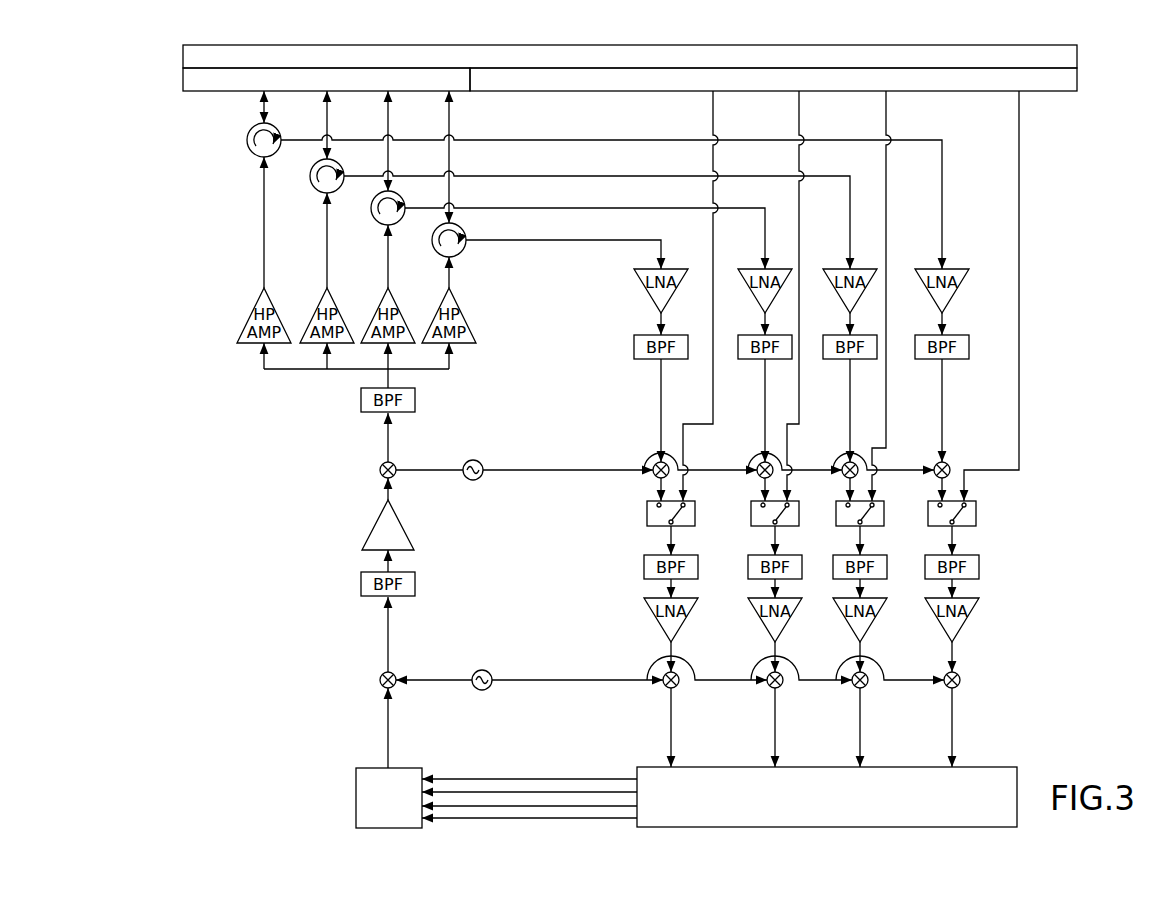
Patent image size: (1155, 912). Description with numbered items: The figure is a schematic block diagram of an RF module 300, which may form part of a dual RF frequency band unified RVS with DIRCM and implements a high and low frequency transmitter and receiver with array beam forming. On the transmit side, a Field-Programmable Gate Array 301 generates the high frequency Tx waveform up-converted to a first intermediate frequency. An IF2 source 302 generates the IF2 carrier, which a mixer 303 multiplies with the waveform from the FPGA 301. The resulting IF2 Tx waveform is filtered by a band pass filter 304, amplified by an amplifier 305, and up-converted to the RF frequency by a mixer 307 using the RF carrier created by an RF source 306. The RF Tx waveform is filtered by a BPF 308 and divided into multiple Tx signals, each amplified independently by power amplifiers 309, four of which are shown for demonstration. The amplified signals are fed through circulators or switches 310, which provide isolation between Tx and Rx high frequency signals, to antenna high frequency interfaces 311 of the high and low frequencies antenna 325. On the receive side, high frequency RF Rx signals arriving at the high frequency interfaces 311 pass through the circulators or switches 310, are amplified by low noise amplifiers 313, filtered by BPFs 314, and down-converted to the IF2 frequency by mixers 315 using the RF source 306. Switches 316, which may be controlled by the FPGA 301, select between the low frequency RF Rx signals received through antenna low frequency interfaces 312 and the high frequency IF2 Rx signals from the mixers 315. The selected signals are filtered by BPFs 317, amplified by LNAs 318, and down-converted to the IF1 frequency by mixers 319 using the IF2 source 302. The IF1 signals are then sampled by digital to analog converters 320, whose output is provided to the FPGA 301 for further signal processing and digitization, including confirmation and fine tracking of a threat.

The RF module 300 is at (252, 742).
The Field-Programmable Gate Array 301 is at (356, 798).
The IF2 Source 302 is at (483, 668).
The mixer 303 is at (380, 676).
The Band Pass Filter 304 is at (362, 584).
The amplifier 305 is at (366, 530).
The RF Source 306 is at (476, 460).
The mixer 307 is at (380, 470).
The BPF 308 is at (362, 400).
The power amplifiers 309 is at (252, 310).
The circulators or switches 310 is at (247, 140).
The antenna high frequency interfaces 311 is at (183, 52).
The antenna low frequency interfaces 312 is at (183, 80).
The Low Noise Amplifiers 313 is at (640, 290).
The BPFs 314 is at (650, 360).
The mixers 315 is at (655, 477).
The switches 316 is at (680, 528).
The BPFs 317 is at (686, 579).
The LNAs 318 is at (690, 613).
The mixers 319 is at (679, 687).
The Digital to Analog Converters 320 is at (757, 765).
The high and low frequencies antenna 325 is at (1077, 52).